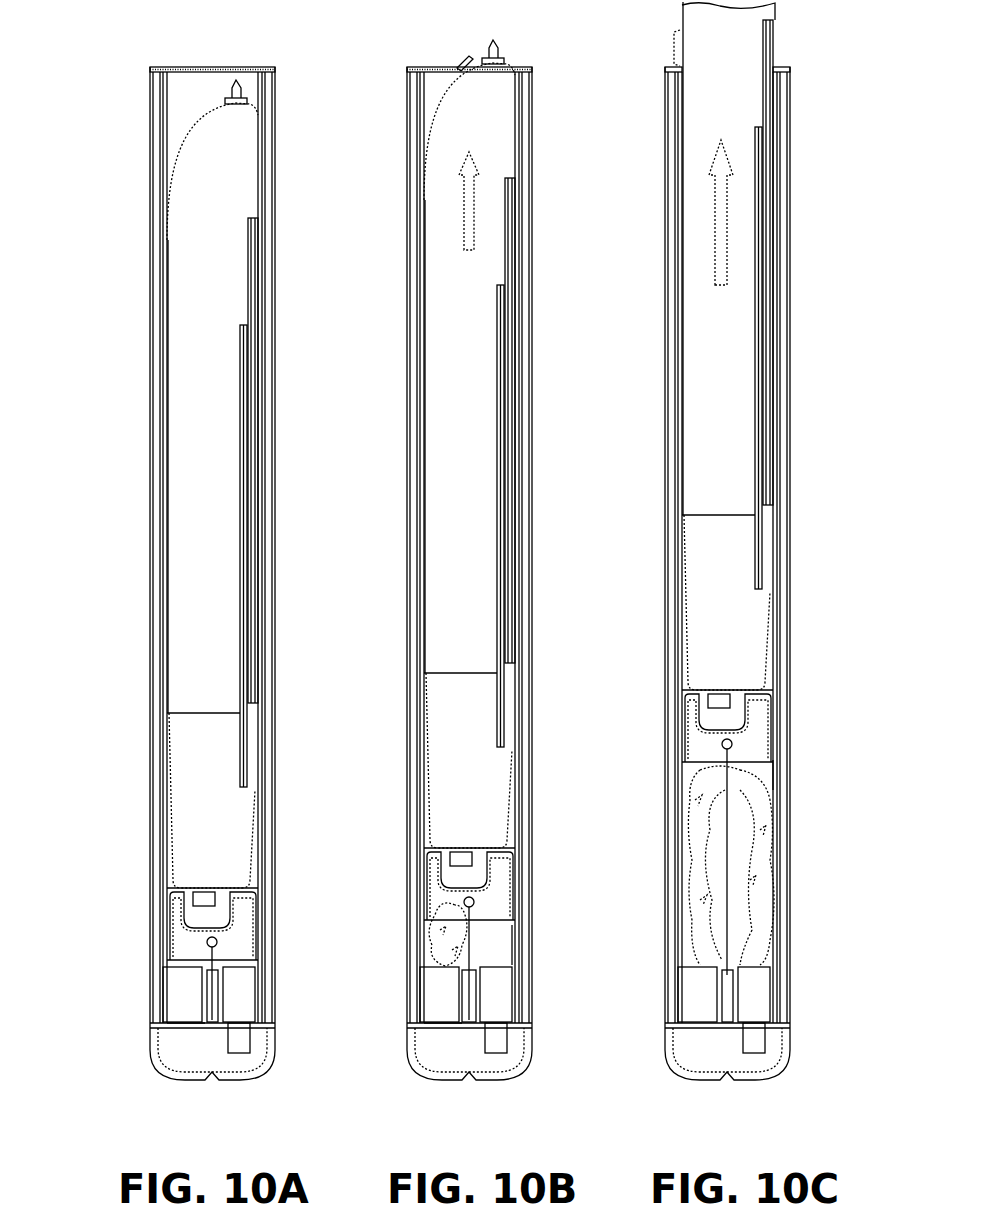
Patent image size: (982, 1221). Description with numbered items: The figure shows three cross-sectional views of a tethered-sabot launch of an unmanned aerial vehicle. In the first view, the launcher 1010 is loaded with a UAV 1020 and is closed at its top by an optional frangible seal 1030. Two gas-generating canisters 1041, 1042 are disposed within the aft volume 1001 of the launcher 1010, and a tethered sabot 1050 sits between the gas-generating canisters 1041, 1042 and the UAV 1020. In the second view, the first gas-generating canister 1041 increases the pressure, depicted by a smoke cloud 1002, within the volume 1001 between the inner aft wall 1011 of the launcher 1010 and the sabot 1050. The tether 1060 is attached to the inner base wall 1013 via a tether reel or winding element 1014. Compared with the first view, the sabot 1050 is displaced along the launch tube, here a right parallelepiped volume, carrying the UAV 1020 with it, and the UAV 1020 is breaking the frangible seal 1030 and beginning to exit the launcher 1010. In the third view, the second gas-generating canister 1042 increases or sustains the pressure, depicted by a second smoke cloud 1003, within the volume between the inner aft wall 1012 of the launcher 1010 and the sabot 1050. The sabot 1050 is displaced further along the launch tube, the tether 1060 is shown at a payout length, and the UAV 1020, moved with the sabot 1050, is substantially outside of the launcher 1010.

In FIG. 10A, the launcher 1010 is at (127, 620).
In FIG. 10A, the UAV 1020 is at (190, 352).
In FIG. 10B, the UAV 1020 is at (445, 395).
In FIG. 10C, the UAV 1020 is at (700, 407).
In FIG. 10A, the frangible seal 1030 is at (207, 58).
In FIG. 10B, the frangible seal 1030 is at (440, 57).
In FIG. 10A, the tethered sabot 1050 is at (180, 912).
In FIG. 10B, the tethered sabot 1050 is at (511, 888).
In FIG. 10A, the first gas-generating canister 1041 is at (185, 975).
In FIG. 10B, the first gas-generating canister 1041 is at (450, 985).
In FIG. 10A, the second gas-generating canister 1042 is at (248, 1002).
In FIG. 10C, the second gas-generating canister 1042 is at (765, 1007).
In FIG. 10A, the aft volume 1001 is at (176, 999).
In FIG. 10B, the aft volume 1001 is at (509, 935).
In FIG. 10B, the smoke cloud 1002 is at (443, 916).
In FIG. 10B, the tether 1060 is at (474, 950).
In FIG. 10C, the tether 1060 is at (728, 787).
In FIG. 10B, the tether reel or winding element 1014 is at (460, 1008).
In FIG. 10B, the inner aft wall 1011 is at (514, 950).
In FIG. 10B, the inner base wall 1013 is at (482, 1013).
In FIG. 10C, the inner aft wall 1012 is at (772, 804).
In FIG. 10C, the second smoke cloud 1003 is at (763, 909).